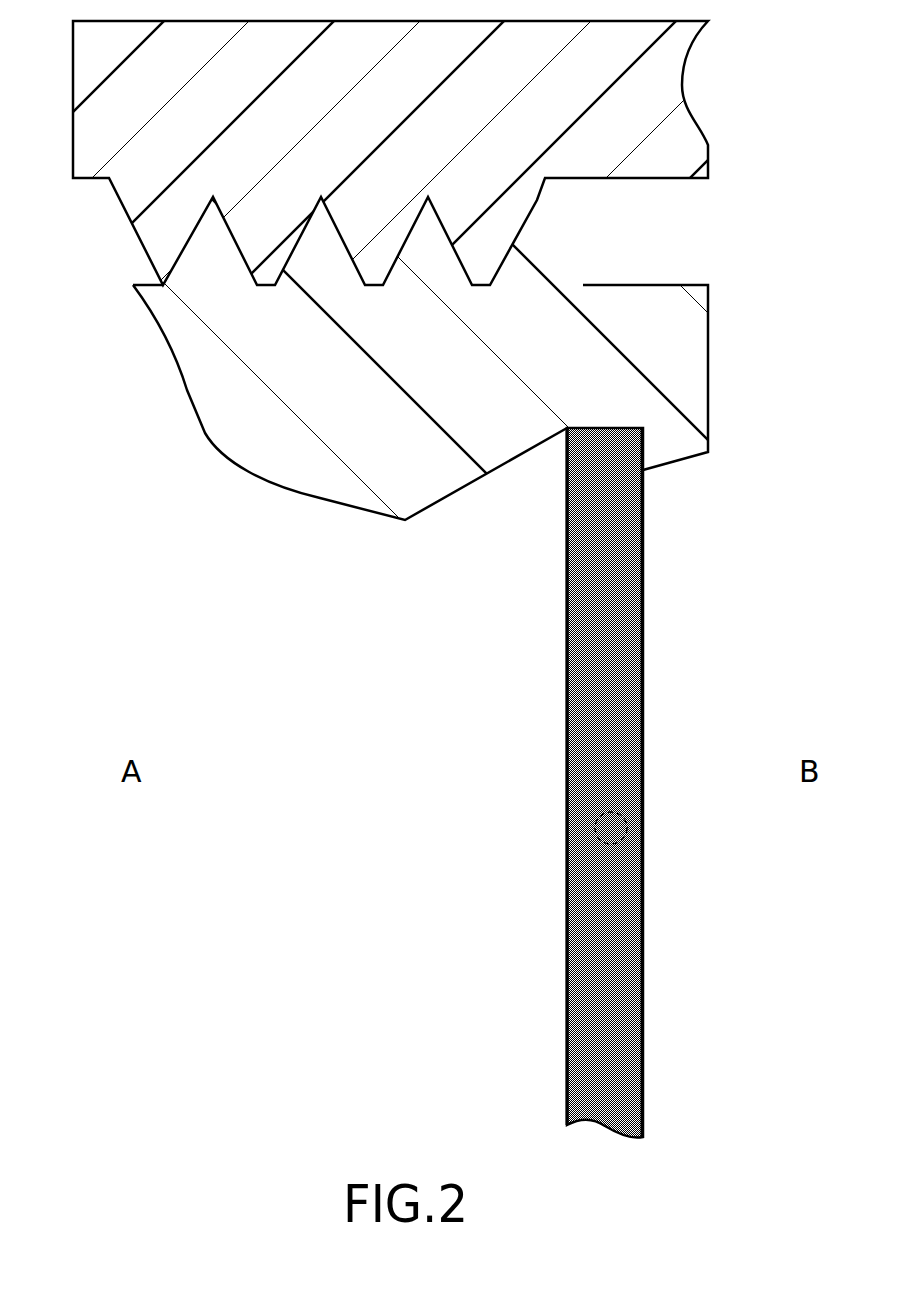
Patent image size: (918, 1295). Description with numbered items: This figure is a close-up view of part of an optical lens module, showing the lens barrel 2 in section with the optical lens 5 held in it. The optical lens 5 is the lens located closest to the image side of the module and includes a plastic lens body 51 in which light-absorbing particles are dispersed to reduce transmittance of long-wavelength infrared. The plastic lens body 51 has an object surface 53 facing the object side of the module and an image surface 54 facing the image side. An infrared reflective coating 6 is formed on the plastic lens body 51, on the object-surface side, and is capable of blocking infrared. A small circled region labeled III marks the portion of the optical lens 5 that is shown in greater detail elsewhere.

The lens barrel 2 is at (187, 390).
The optical lens 5 is at (610, 783).
The infrared reflective coating 6 is at (567, 707).
The plastic lens body 51 is at (625, 750).
The object surface 53 is at (567, 862).
The image surface 54 is at (643, 885).
The detail region III is at (627, 815).